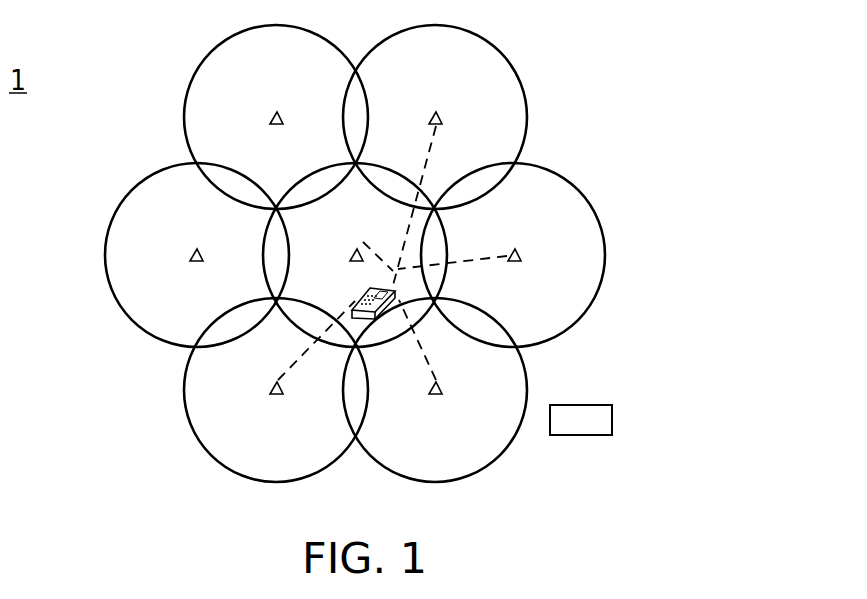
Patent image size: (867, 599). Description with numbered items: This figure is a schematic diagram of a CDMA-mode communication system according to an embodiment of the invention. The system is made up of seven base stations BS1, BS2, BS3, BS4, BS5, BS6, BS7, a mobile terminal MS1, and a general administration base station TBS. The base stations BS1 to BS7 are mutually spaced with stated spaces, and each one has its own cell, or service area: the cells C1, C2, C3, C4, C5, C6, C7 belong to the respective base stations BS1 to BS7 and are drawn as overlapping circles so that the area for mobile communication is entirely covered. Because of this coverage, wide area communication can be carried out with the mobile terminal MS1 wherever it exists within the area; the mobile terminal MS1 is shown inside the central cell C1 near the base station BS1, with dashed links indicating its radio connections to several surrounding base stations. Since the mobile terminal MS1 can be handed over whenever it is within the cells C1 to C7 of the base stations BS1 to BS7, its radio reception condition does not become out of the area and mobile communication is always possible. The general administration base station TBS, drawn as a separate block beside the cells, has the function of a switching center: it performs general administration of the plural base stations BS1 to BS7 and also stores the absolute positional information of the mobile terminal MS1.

The cell C1 is at (448, 227).
The cell C2 is at (504, 50).
The cell C3 is at (607, 239).
The cell C4 is at (529, 394).
The cell C5 is at (203, 455).
The cell C6 is at (105, 301).
The cell C7 is at (186, 87).
The base station BS1 is at (356, 249).
The base station BS2 is at (440, 111).
The base station BS3 is at (522, 256).
The base station BS4 is at (438, 396).
The base station BS5 is at (277, 396).
The base station BS6 is at (191, 254).
The base station BS7 is at (277, 111).
The mobile terminal MS1 is at (353, 309).
The general administration base station TBS is at (581, 436).